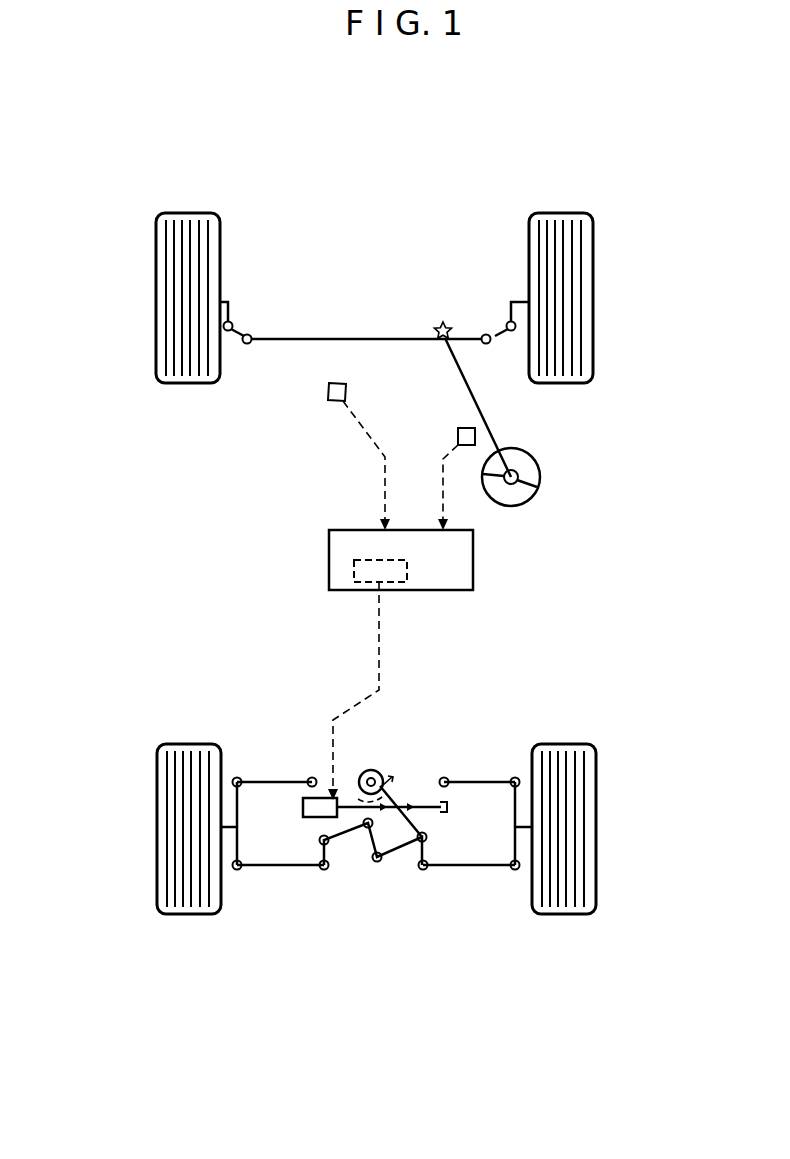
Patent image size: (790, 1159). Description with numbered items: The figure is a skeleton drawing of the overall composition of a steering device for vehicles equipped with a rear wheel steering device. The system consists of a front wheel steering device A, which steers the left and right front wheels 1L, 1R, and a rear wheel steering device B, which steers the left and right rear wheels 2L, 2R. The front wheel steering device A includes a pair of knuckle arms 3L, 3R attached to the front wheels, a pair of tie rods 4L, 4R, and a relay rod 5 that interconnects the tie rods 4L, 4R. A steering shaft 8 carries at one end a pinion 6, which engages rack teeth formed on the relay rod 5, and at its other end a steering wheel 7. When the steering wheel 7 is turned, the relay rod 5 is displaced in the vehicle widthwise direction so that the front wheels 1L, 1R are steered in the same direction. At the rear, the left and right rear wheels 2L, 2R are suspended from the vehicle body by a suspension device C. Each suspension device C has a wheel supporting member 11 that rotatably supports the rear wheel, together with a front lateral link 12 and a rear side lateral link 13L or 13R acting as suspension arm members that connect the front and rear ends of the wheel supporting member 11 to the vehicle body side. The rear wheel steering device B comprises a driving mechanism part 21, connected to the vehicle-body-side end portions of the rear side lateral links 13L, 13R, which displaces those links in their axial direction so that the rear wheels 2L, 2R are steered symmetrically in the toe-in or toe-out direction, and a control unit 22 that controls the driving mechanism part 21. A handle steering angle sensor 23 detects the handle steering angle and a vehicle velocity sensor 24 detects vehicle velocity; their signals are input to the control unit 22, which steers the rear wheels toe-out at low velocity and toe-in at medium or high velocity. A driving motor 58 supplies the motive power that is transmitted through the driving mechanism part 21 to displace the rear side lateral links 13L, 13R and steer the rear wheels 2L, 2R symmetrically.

The left front wheel 1L is at (156, 253).
The right front wheel 1R is at (593, 248).
The left rear wheel 2L is at (157, 832).
The right rear wheel 2R is at (593, 818).
The left knuckle arm 3L is at (229, 315).
The right knuckle arm 3R is at (510, 318).
The left tie rod 4L is at (247, 344).
The right tie rod 4R is at (491, 345).
The relay rod 5 is at (337, 337).
The pinion 6 is at (437, 322).
The steering wheel 7 is at (541, 470).
The steering shaft 8 is at (463, 386).
The wheel supporting member 11 is at (238, 802).
The front side lateral link 12 is at (282, 778).
The left rear side lateral link 13L is at (282, 866).
The right rear side lateral link 13R is at (482, 866).
The driving mechanism part 21 is at (352, 878).
The control unit 22 is at (473, 562).
The handle steering angle sensor 23 is at (465, 447).
The vehicle velocity sensor 24 is at (329, 390).
The driving motor 58 is at (310, 818).
The front wheel steering device A is at (404, 255).
The rear wheel steering device B is at (412, 903).
The suspension device C is at (250, 711).